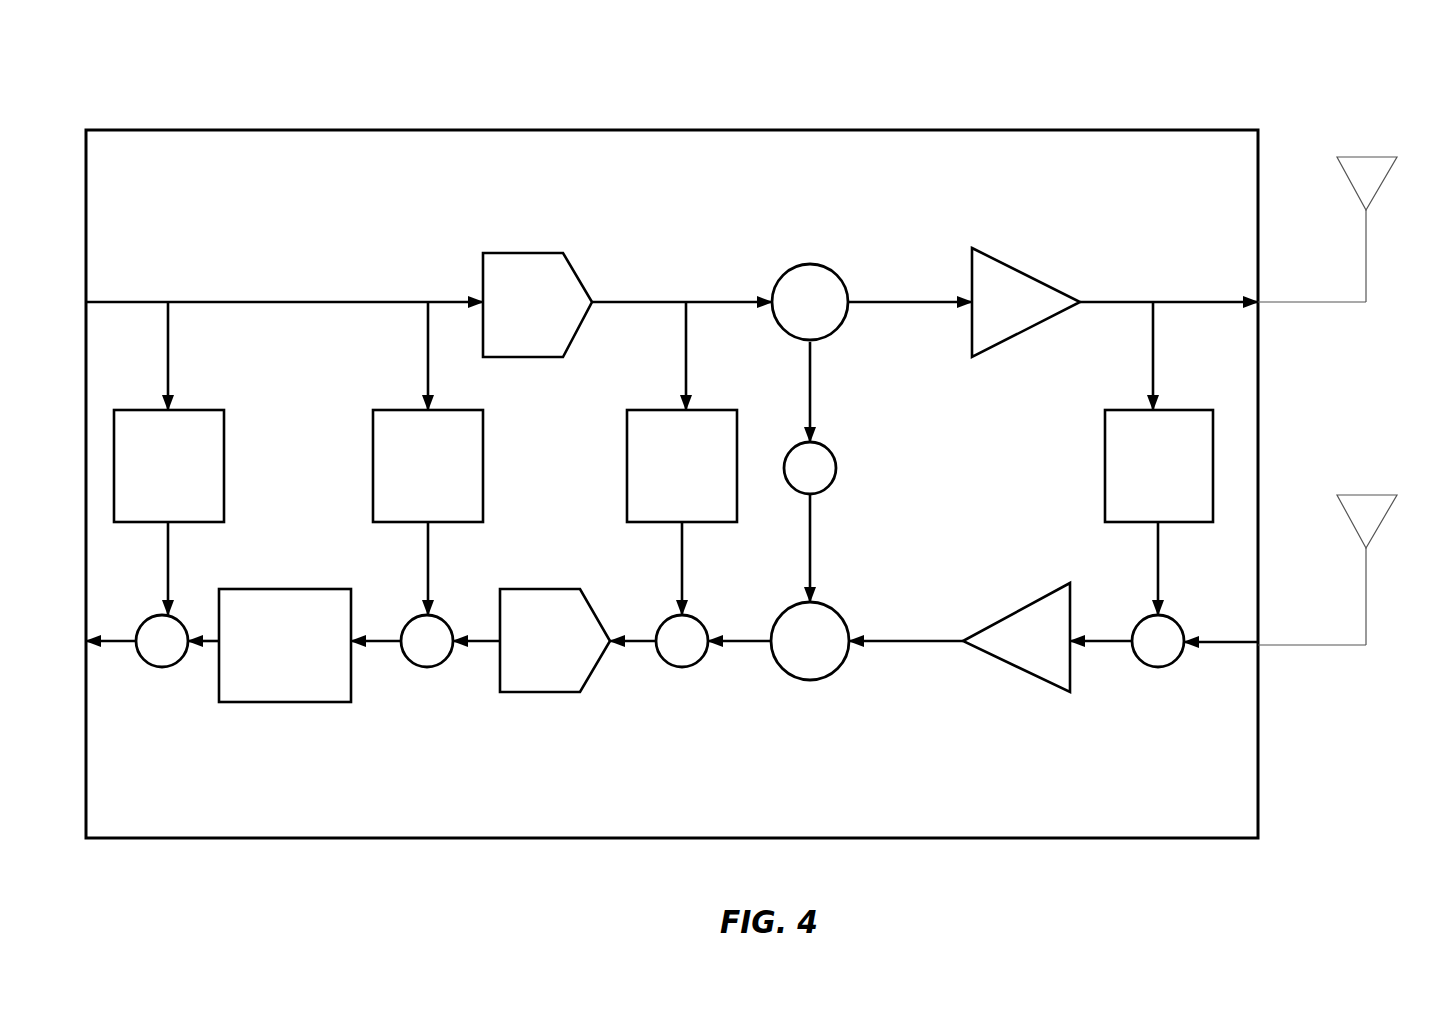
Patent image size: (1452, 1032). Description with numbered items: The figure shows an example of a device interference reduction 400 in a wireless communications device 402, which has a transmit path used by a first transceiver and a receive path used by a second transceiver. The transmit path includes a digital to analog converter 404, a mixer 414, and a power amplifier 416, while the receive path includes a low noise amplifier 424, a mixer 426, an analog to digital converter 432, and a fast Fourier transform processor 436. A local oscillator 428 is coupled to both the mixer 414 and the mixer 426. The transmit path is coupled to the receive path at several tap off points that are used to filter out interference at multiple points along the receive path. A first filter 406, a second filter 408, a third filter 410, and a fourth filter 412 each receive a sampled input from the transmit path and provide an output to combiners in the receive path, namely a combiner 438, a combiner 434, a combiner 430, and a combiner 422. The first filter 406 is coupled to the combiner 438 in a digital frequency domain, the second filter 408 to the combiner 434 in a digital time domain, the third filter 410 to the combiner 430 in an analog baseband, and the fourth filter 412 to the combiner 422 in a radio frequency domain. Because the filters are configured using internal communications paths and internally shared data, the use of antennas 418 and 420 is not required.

The device interference reduction 400 is at (1317, 53).
The wireless communications device 402 is at (672, 484).
The digital to analog converter 404 is at (537, 305).
The first filter 406 is at (169, 466).
The second filter 408 is at (428, 466).
The third filter 410 is at (682, 466).
The fourth filter 412 is at (1159, 466).
The mixer 414 is at (900, 243).
The power amplifier 416 is at (1070, 248).
The antenna 418 is at (1283, 302).
The antenna 420 is at (1283, 645).
The combiner 422 is at (1168, 666).
The low noise amplifier 424 is at (1040, 677).
The mixer 426 is at (838, 668).
The local oscillator 428 is at (832, 485).
The combiner 430 is at (693, 665).
The analog to digital converter 432 is at (555, 640).
The combiner 434 is at (467, 707).
The fast Fourier transform (FFT) processor 436 is at (285, 645).
The combiner 438 is at (165, 665).